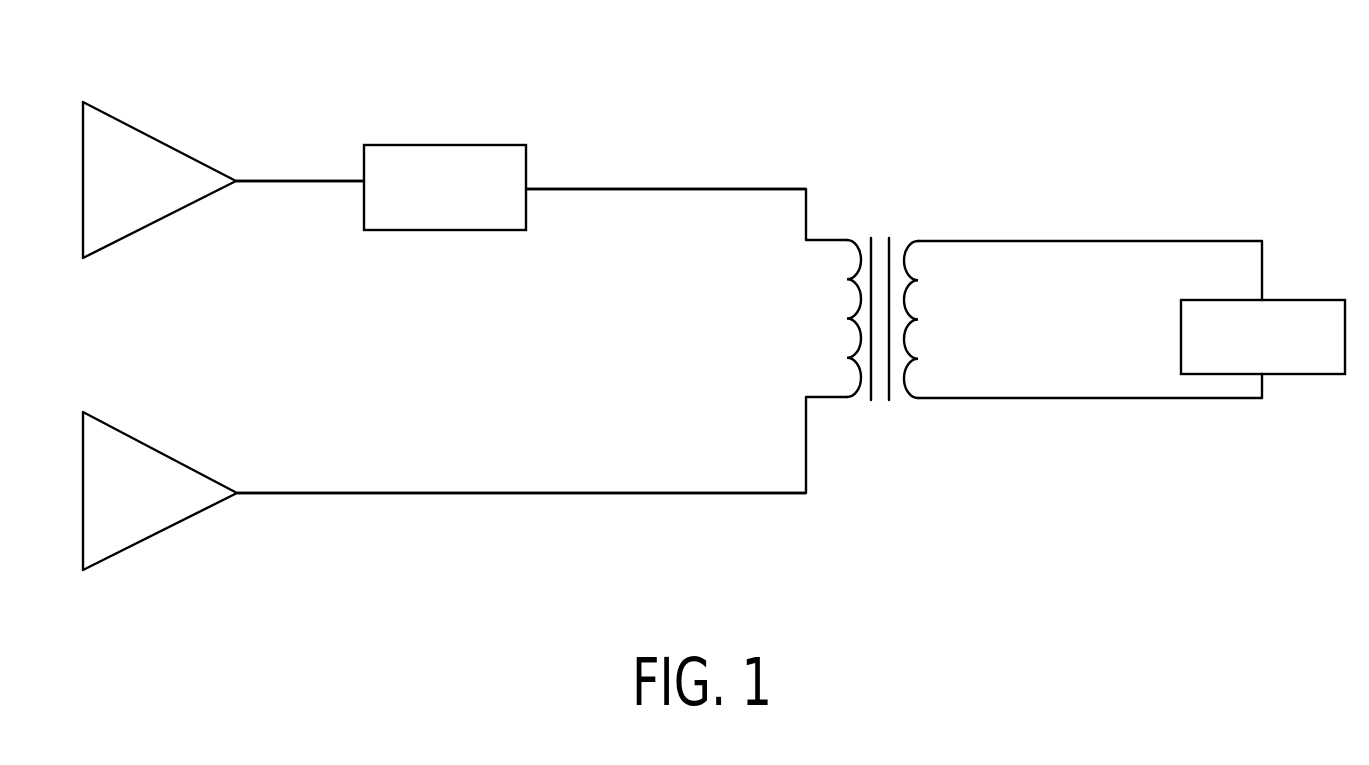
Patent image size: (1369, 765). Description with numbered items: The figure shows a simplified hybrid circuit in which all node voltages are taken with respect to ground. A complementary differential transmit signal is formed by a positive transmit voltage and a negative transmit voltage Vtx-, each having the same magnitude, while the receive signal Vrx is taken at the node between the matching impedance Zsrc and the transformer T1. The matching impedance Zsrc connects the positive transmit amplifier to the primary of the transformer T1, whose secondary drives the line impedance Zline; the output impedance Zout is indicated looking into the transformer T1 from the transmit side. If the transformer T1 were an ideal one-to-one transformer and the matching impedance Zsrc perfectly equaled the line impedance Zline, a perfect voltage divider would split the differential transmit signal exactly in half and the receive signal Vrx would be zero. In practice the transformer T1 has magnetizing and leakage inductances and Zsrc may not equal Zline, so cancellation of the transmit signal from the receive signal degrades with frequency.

The matching impedance Zsrc is at (445, 187).
The line impedance Zline is at (1263, 337).
The transformer T1 is at (882, 286).
The negative transmit signal Vtx- is at (521, 430).
The receive signal Vrx is at (666, 164).
The output impedance Zout is at (722, 305).